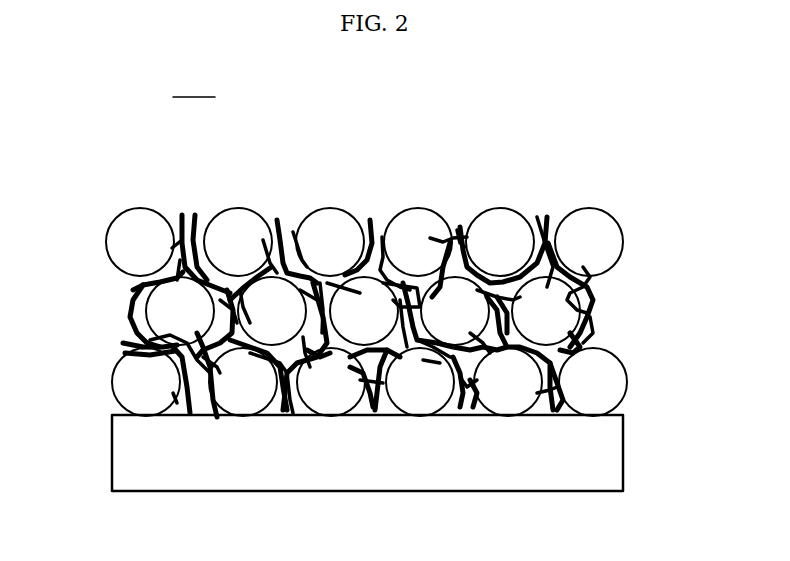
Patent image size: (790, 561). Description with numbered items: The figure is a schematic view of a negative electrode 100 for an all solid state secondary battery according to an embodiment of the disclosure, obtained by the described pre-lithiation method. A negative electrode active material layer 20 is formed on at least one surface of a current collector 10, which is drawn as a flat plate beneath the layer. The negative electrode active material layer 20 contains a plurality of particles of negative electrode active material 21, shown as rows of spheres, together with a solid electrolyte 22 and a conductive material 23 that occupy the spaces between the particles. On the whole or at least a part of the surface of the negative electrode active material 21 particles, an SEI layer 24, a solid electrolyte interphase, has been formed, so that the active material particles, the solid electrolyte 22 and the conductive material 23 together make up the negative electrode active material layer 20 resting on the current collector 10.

The negative electrode for all solid state secondary battery 100 is at (196, 83).
The current collector 10 is at (623, 452).
The negative electrode active material layer 20 is at (374, 280).
The negative electrode active material 21 is at (140, 208).
The solid electrolyte 22 is at (276, 213).
The conductive material 23 is at (443, 236).
The SEI layer 24 is at (128, 315).